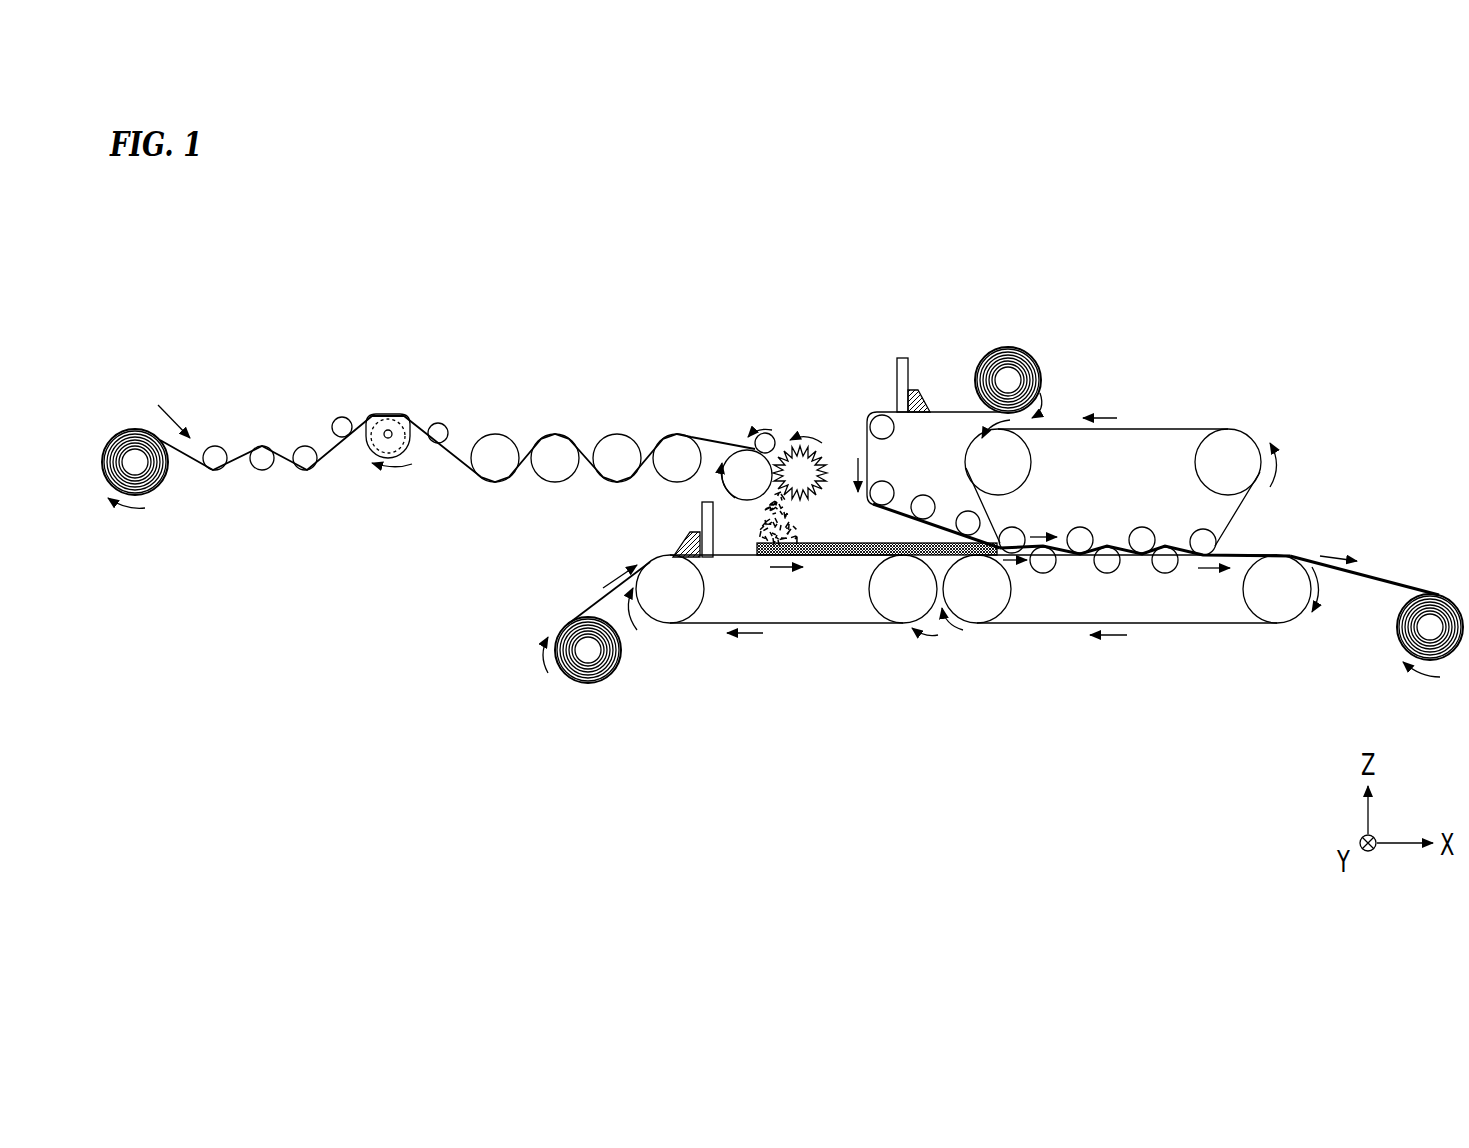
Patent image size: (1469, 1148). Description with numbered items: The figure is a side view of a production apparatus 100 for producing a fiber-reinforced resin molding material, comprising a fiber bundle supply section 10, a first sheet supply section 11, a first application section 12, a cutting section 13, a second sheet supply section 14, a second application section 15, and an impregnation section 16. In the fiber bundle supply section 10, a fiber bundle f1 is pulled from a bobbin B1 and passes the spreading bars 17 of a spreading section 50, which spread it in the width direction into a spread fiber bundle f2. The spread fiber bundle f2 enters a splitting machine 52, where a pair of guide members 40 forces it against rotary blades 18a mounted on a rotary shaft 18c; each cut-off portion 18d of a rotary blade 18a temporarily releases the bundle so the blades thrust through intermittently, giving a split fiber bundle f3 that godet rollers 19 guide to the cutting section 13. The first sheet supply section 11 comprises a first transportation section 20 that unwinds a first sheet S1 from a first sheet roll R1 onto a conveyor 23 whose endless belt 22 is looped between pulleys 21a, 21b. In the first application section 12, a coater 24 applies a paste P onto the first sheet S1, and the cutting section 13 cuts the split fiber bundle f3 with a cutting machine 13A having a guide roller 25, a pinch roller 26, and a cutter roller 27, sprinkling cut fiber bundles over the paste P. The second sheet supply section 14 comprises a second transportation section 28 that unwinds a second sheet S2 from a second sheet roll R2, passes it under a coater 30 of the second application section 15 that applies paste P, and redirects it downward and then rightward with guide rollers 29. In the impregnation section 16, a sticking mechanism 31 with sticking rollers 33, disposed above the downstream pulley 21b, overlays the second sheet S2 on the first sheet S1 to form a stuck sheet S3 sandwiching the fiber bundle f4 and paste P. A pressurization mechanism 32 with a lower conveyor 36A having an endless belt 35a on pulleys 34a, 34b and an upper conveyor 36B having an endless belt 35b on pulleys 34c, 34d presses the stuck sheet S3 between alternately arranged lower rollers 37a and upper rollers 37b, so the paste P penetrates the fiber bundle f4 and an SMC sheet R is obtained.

The production apparatus 100 is at (1015, 236).
The fiber bundle supply section 10 is at (381, 357).
The first sheet supply section 11 is at (567, 590).
The first application section 12 is at (668, 523).
The cutting section 13 is at (783, 411).
The cutting machine 13A is at (786, 437).
The second sheet supply section 14 is at (1028, 335).
The second application section 15 is at (905, 326).
The impregnation section 16 is at (1117, 517).
The spreading bars 17 is at (263, 448).
The rotary blades 18a is at (408, 450).
The rotary shaft 18c is at (390, 430).
The cut-off portion 18d is at (382, 411).
The godet rollers 19 is at (617, 445).
The first transportation section 20 is at (695, 686).
The pulley 21a is at (665, 607).
The pulley 21b is at (897, 612).
The endless belt 22 is at (852, 625).
The conveyor 23 is at (788, 636).
The coater 24 is at (702, 506).
The guide roller 25 is at (740, 470).
The pinch roller 26 is at (767, 440).
The cutter roller 27 is at (820, 456).
The second transportation section 28 is at (877, 406).
The guide rollers 29 is at (882, 487).
The coater 30 is at (908, 367).
The sticking mechanism 31 is at (903, 528).
The pressurization mechanism 32 is at (1078, 651).
The sticking rollers 33 is at (967, 523).
The pulley 34a is at (983, 612).
The pulley 34b is at (1293, 607).
The pulley 34c is at (1028, 462).
The pulley 34d is at (1247, 447).
The endless belt 35a is at (1170, 625).
The endless belt 35b is at (1152, 427).
The lower conveyor 36A is at (1220, 638).
The upper conveyor 36B is at (1205, 413).
The lower rollers 37a is at (1110, 567).
The upper rollers 37b is at (1142, 530).
The guide members 40 is at (338, 422).
The spreading section 50 is at (262, 492).
The splitting machine 52 is at (386, 490).
The bobbin B1 is at (134, 428).
The first sheet roll R1 is at (568, 681).
The second sheet roll R2 is at (1045, 370).
The SMC sheet R is at (1373, 572).
The first sheet S1 is at (606, 592).
The second sheet S2 is at (958, 412).
The stuck sheet S3 is at (1103, 535).
The paste P is at (682, 545).
The fiber bundle f1 is at (188, 466).
The spread fiber bundle f2 is at (244, 455).
The split fiber bundle f3 is at (458, 443).
The fiber bundle f4 is at (750, 544).